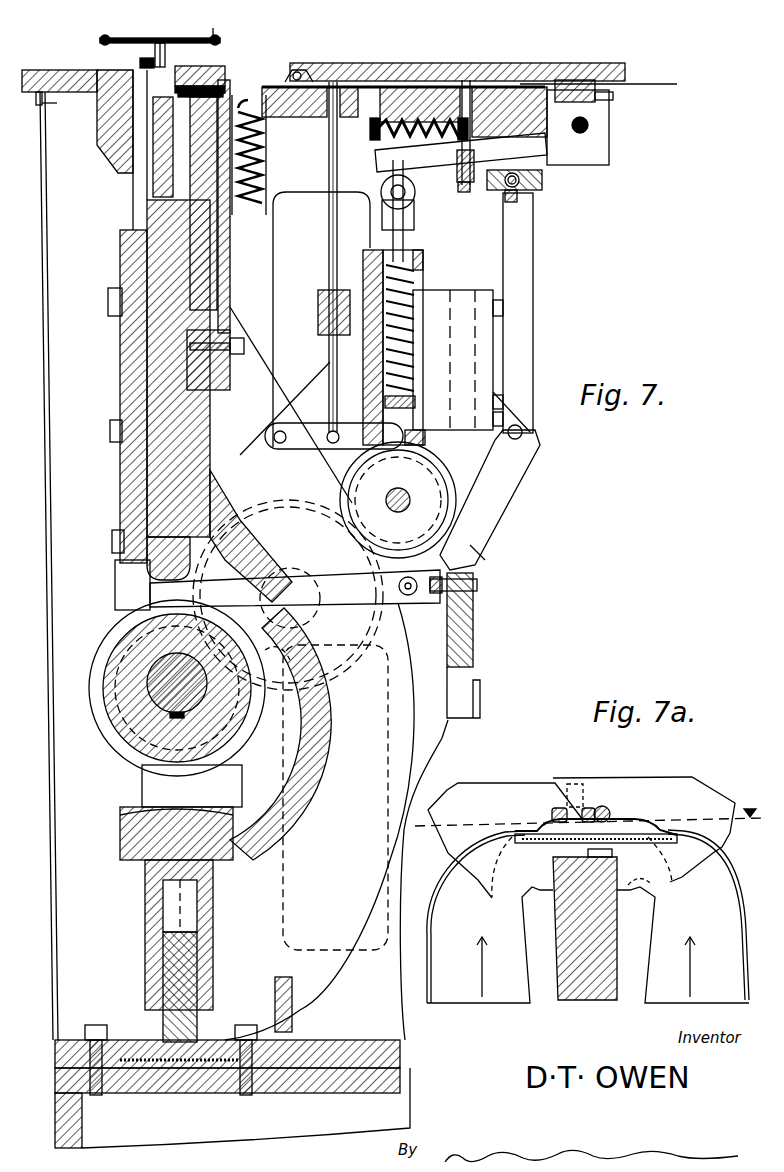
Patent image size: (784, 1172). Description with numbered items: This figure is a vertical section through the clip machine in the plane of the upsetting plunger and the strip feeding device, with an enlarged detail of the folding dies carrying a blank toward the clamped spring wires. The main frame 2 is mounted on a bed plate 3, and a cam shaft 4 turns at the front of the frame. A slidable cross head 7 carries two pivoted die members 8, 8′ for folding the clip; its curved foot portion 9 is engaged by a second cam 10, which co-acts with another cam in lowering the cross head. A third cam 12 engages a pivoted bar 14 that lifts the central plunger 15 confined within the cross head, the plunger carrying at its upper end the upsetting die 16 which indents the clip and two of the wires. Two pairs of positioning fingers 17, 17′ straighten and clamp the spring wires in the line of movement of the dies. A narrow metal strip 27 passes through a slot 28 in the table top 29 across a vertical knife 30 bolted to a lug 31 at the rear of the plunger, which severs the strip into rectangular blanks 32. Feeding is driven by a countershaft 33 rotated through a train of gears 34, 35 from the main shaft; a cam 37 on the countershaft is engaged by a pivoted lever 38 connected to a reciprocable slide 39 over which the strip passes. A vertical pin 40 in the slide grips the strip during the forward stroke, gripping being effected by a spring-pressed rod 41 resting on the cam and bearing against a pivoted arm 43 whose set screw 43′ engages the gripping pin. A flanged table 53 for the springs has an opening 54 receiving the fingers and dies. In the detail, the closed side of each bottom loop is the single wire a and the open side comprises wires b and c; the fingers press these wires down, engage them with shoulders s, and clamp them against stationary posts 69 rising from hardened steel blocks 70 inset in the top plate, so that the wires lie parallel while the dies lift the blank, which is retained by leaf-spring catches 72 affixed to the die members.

In FIG. 7, the main frame 2 is at (475, 651).
In FIG. 7, the bed plate 3 is at (55, 1088).
In FIG. 7, the cam shaft 4 is at (150, 685).
In FIG. 7, the cross head 7 is at (95, 488).
In FIG. 7A, the pivoted die member 8 is at (490, 920).
In FIG. 7A, the pivoted die member 8′ is at (683, 920).
In FIG. 7, the curved foot portion 9 is at (320, 758).
In FIG. 7, the second cam 10 is at (100, 645).
In FIG. 7, the third cam 12 is at (108, 740).
In FIG. 7, the pivoted bar 14 is at (150, 597).
In FIG. 7, the central plunger 15 is at (135, 575).
In FIG. 7A, the central plunger 15 is at (590, 1000).
In FIG. 7, the upsetting die 16 is at (100, 113).
In FIG. 7A, the upsetting die 16 is at (615, 862).
In FIG. 7A, the positioning fingers 17 is at (520, 783).
In FIG. 7A, the positioning fingers 17′ is at (620, 777).
In FIG. 7, the metal strip 27 is at (658, 85).
In FIG. 7, the slot 28 is at (280, 70).
In FIG. 7, the table top 29 is at (412, 63).
In FIG. 7, the knife 30 is at (266, 135).
In FIG. 7, the lug 31 is at (230, 378).
In FIG. 7, the blank 32 is at (208, 92).
In FIG. 7A, the blank 32 is at (635, 832).
In FIG. 7, the countershaft 33 is at (404, 490).
In FIG. 7, the gear 34 is at (340, 505).
In FIG. 7, the gear 35 is at (340, 655).
In FIG. 7, the cam 37 is at (480, 530).
In FIG. 7, the pivoted lever 38 is at (512, 489).
In FIG. 7, the reciprocable slide 39 is at (547, 180).
In FIG. 7, the vertical pin 40 is at (467, 80).
In FIG. 7, the spring-pressed rod 41 is at (410, 238).
In FIG. 7, the pivoted arm 43 is at (461, 152).
In FIG. 7, the set screw 43′ is at (460, 186).
In FIG. 7, the table 53 is at (222, 41).
In FIG. 7, the opening 54 is at (176, 40).
In FIG. 7, the post 69 is at (140, 62).
In FIG. 7A, the post 69 is at (576, 784).
In FIG. 7A, the steel block 70 is at (535, 845).
In FIG. 7A, the leaf-spring catch 72 is at (500, 832).
In FIG. 7A, the wire a is at (550, 812).
In FIG. 7A, the wire b is at (590, 808).
In FIG. 7A, the wire c is at (608, 808).
In FIG. 7A, the shoulder s is at (553, 831).